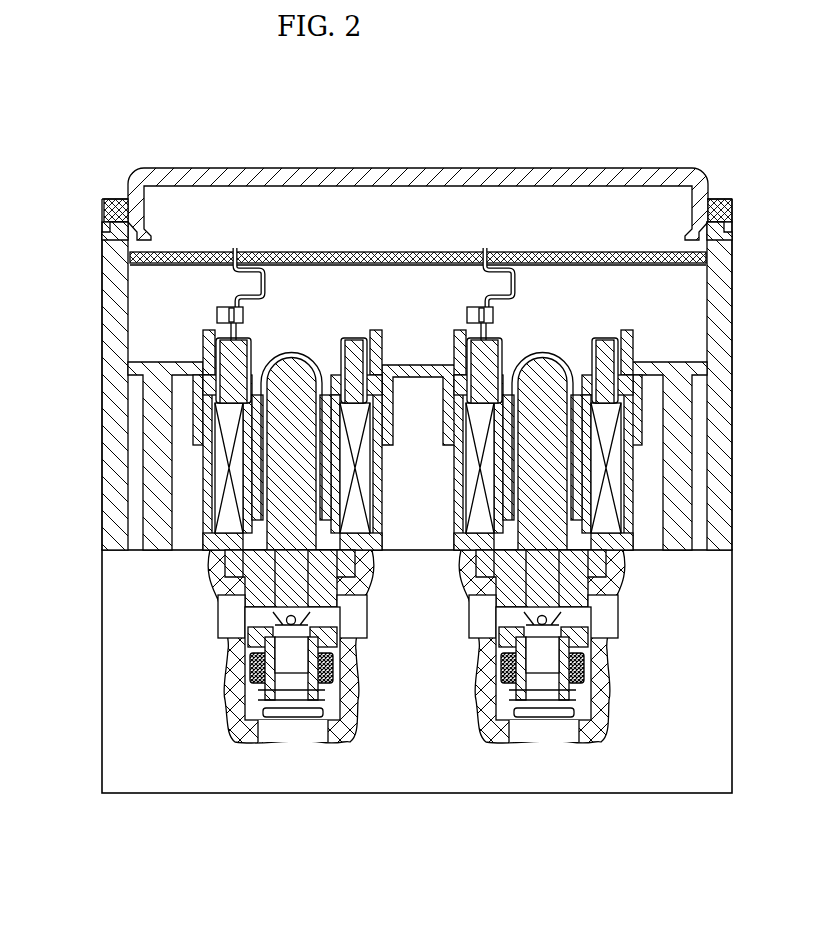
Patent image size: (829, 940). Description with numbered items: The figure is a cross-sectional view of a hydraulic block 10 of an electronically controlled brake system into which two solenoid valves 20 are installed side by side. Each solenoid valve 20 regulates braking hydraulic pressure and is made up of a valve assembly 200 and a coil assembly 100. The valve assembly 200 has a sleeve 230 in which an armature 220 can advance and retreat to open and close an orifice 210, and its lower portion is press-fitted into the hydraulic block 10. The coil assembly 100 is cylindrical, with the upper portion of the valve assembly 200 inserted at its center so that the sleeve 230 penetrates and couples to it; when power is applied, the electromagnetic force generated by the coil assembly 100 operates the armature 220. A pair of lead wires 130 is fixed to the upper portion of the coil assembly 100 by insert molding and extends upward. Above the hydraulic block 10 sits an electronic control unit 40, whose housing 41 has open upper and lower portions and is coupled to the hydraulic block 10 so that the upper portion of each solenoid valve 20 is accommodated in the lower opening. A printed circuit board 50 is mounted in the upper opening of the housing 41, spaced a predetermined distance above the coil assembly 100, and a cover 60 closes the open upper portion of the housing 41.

The hydraulic block 10 is at (715, 600).
The solenoid valve 20 is at (366, 479).
The electronic control unit 40 is at (382, 339).
The housing 41 is at (108, 323).
The printed circuit board 50 is at (362, 252).
The cover 60 is at (406, 178).
The coil assembly 100 is at (192, 492).
The lead wires 130 is at (236, 247).
The valve assembly 200 is at (367, 646).
The orifice 210 is at (588, 636).
The armature 220 is at (597, 570).
The sleeve 230 is at (546, 357).